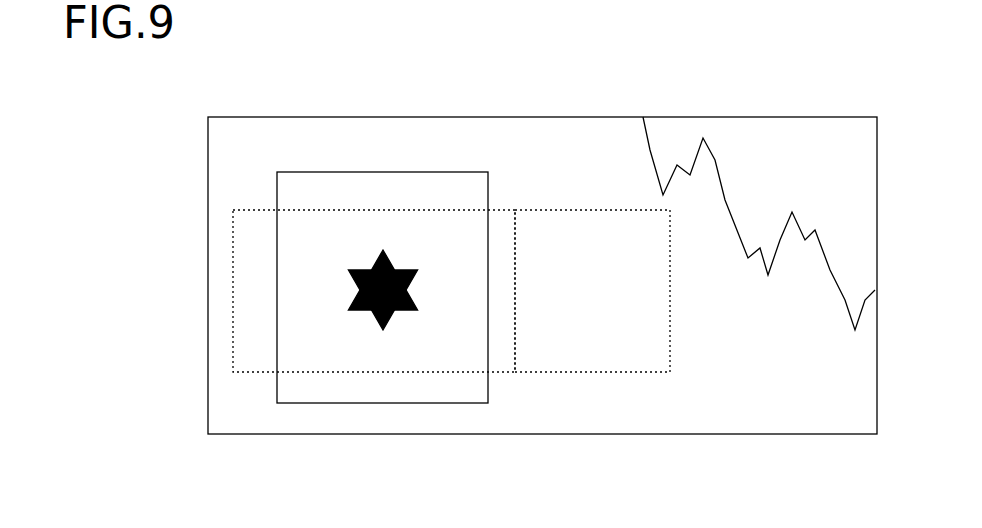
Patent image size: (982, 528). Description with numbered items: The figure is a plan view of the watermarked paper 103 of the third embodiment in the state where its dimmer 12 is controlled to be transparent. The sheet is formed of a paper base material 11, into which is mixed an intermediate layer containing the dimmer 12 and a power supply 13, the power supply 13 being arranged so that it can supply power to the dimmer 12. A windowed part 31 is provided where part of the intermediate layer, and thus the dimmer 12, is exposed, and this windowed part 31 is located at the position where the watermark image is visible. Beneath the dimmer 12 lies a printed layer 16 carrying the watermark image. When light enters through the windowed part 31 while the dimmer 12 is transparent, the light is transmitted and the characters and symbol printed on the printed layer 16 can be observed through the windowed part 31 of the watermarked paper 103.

The watermarked paper 103 is at (827, 70).
The paper base material 11 is at (767, 143).
The windowed part 31 is at (324, 173).
The dimmer 12 is at (460, 227).
The power supply 13 is at (612, 342).
The printed layer 16 is at (437, 246).